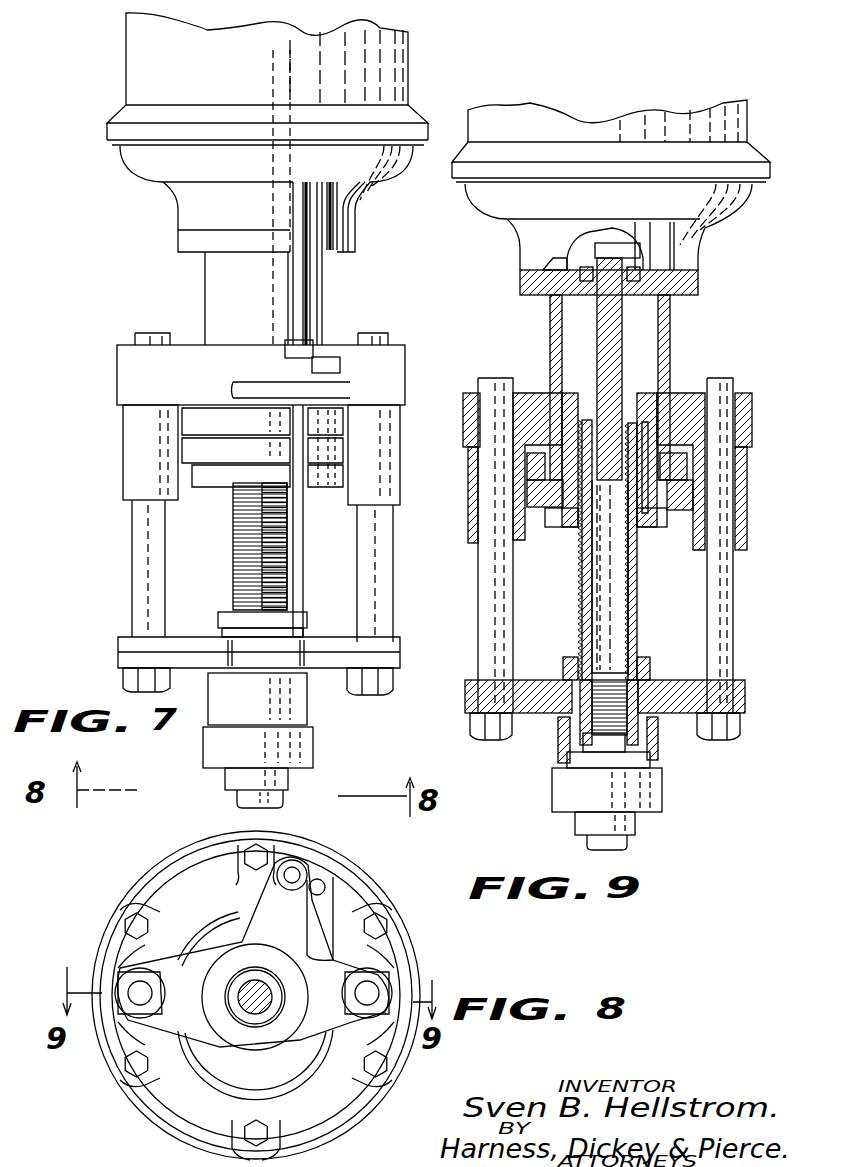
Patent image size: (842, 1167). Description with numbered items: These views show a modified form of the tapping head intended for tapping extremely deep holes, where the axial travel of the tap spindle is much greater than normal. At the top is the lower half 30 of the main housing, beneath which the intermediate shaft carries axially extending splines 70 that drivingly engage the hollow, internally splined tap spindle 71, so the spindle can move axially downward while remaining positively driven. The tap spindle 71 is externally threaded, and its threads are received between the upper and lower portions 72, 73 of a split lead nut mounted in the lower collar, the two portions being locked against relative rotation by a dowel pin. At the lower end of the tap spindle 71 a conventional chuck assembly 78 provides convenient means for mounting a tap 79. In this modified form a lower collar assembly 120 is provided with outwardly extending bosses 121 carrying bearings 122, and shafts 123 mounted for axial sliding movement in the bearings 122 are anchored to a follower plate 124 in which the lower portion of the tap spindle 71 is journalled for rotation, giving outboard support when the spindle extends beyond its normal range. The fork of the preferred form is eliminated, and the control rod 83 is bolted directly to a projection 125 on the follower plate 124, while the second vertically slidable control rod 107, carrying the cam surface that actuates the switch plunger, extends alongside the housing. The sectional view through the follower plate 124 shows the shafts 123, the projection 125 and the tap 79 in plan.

In FIG. 7, the lower half of the main housing 30 is at (186, 212).
In FIG. 9, the lower half of the main housing 30 is at (520, 246).
In FIG. 9, the splines 70 is at (622, 393).
In FIG. 7, the tap spindle 71 is at (240, 553).
In FIG. 9, the tap spindle 71 is at (640, 562).
In FIG. 9, the upper portion of the split lead nut 72 is at (568, 446).
In FIG. 9, the lower portion of the split lead nut 73 is at (568, 528).
In FIG. 7, the chuck assembly 78 is at (304, 751).
In FIG. 9, the chuck assembly 78 is at (650, 791).
In FIG. 7, the tap 79 is at (266, 809).
In FIG. 9, the tap 79 is at (624, 848).
In FIG. 8, the tap 79 is at (268, 998).
In FIG. 7, the control rod 83 is at (300, 572).
In FIG. 9, the control rod 83 is at (610, 465).
In FIG. 8, the control rod 83 is at (290, 862).
In FIG. 7, the control rod 107 is at (336, 291).
In FIG. 7, the lower collar assembly 120 is at (218, 284).
In FIG. 9, the lower collar assembly 120 is at (672, 339).
In FIG. 7, the bosses 121 is at (396, 362).
In FIG. 9, the bosses 121 is at (464, 403).
In FIG. 7, the bearings 122 is at (128, 473).
In FIG. 9, the bearings 122 is at (470, 540).
In FIG. 7, the shafts 123 is at (143, 570).
In FIG. 9, the shafts 123 is at (500, 603).
In FIG. 8, the shafts 123 is at (140, 993).
In FIG. 7, the follower plate 124 is at (351, 669).
In FIG. 9, the follower plate 124 is at (668, 692).
In FIG. 7, the projection 125 is at (302, 646).
In FIG. 8, the projection 125 is at (300, 910).